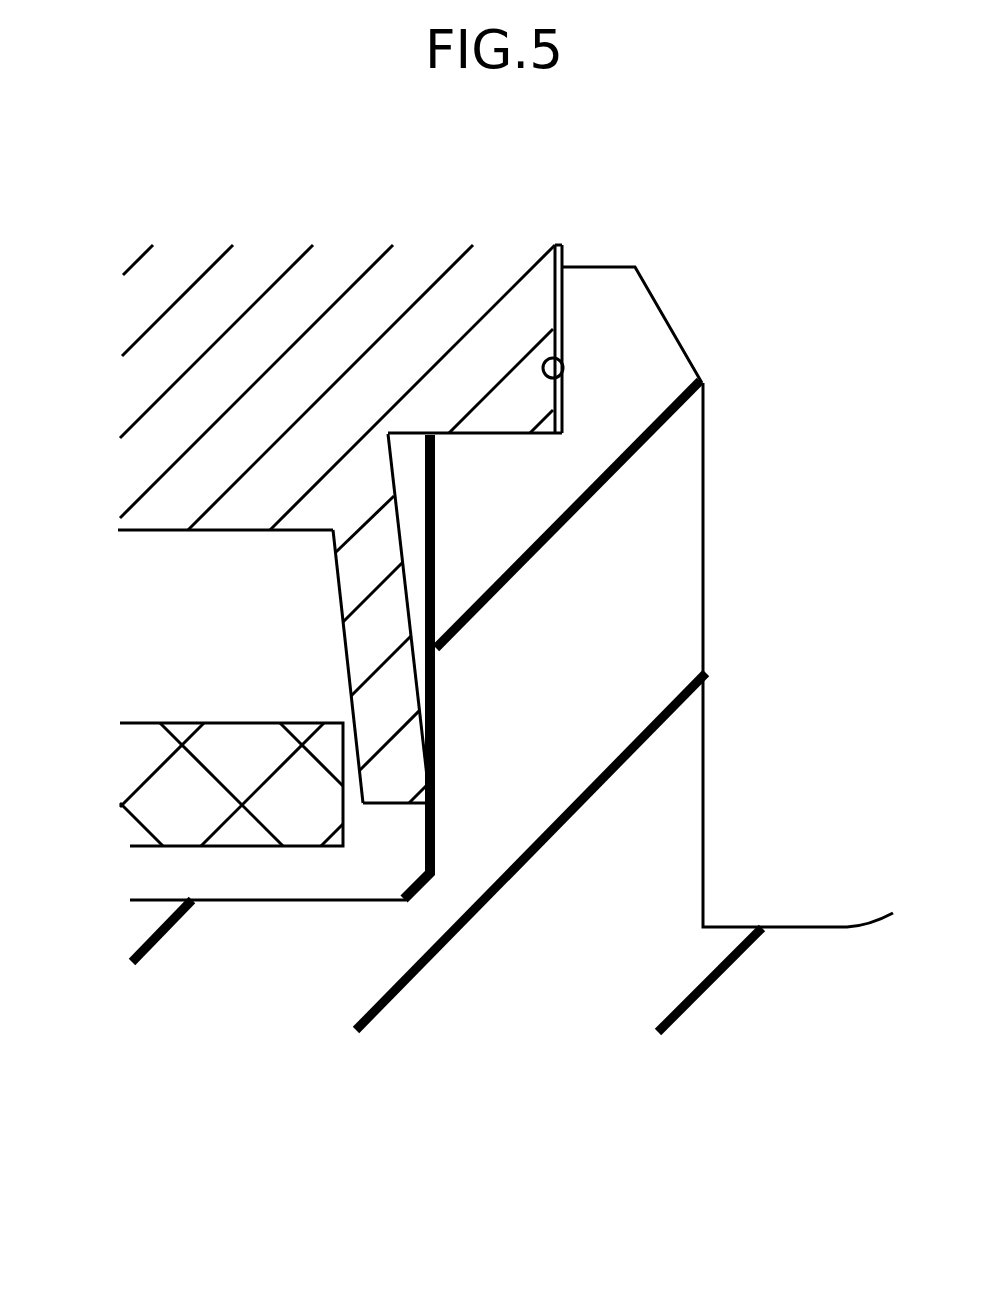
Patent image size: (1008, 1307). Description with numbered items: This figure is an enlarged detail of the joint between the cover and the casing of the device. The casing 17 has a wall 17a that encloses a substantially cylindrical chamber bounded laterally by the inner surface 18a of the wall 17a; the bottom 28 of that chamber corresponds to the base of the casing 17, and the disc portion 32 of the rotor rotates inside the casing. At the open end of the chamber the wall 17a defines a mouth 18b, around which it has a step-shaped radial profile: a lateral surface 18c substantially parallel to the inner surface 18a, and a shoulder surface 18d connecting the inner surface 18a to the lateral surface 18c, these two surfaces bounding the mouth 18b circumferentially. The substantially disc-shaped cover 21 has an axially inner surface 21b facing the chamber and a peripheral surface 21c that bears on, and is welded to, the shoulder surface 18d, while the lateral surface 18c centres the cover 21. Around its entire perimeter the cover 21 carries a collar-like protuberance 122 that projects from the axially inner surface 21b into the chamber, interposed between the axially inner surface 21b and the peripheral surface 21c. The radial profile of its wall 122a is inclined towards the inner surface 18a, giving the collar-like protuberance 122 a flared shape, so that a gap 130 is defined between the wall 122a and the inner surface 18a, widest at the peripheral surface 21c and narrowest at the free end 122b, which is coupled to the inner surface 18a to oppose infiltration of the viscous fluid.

The casing 17 is at (513, 953).
The wall 17a is at (672, 598).
The inner surface 18a is at (420, 626).
The mouth 18b is at (546, 294).
The lateral surface 18c is at (565, 347).
The shoulder surface 18d is at (493, 433).
The cover 21 is at (346, 272).
The axially inner surface 21b is at (215, 533).
The peripheral surface 21c is at (467, 437).
The bottom 28 is at (163, 900).
The disc portion 32 is at (253, 720).
The collar-like protuberance 122 is at (410, 580).
The wall of the collar-like protuberance 122a is at (372, 637).
The free end 122b is at (380, 778).
The gap 130 is at (414, 452).